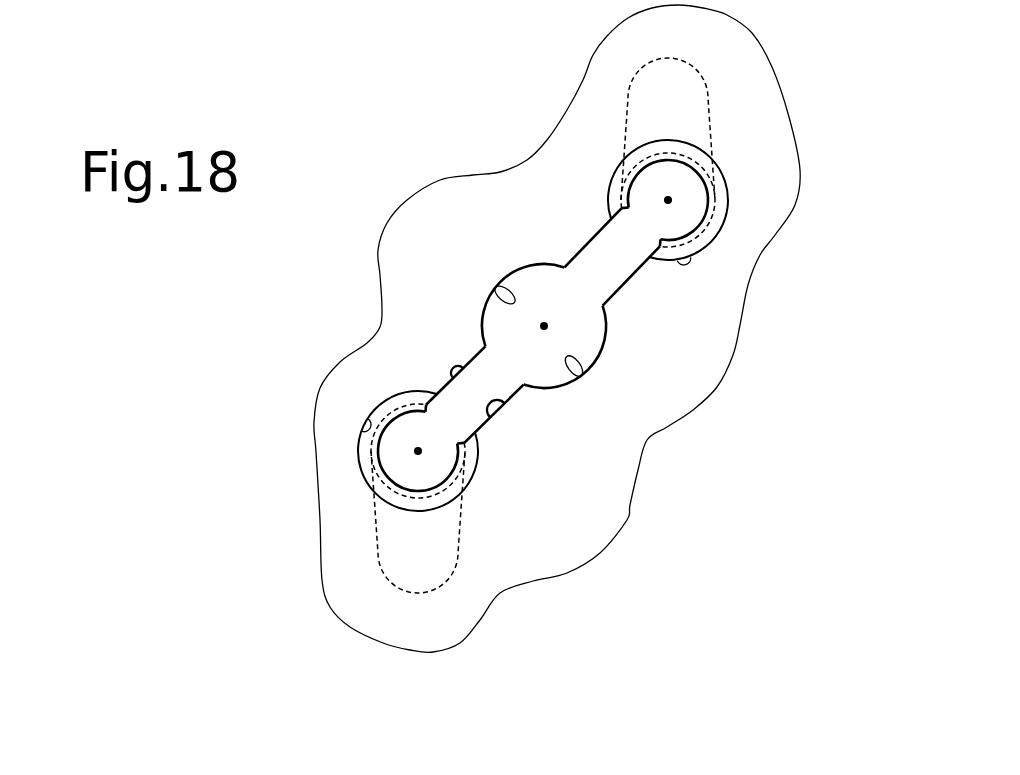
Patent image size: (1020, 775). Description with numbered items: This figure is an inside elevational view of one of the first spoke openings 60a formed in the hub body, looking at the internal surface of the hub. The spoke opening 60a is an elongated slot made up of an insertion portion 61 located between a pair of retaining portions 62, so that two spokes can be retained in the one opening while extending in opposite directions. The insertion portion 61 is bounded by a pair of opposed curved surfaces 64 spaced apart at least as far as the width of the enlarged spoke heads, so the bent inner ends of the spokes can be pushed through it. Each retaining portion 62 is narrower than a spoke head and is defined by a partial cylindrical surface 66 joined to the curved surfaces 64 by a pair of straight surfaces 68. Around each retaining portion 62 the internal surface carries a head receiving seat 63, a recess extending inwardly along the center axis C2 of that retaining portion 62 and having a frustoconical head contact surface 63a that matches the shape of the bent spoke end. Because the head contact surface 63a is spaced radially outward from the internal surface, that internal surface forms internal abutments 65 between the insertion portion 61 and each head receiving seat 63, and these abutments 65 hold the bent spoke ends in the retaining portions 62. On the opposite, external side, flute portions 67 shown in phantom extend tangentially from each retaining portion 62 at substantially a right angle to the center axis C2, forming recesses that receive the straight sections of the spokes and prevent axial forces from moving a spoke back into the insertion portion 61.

The first spoke opening 60a is at (530, 259).
The insertion portion 61 is at (580, 371).
The retaining portion 62 is at (400, 449).
The head receiving seat 63 is at (360, 433).
The head contact surface 63a is at (367, 458).
The curved surface 64 is at (503, 290).
The internal abutment 65 is at (598, 215).
The partial cylindrical surface 66 is at (475, 465).
The flute portion 67 is at (463, 542).
The straight surface 68 is at (582, 243).
The center axis of retaining portion C2 is at (670, 202).